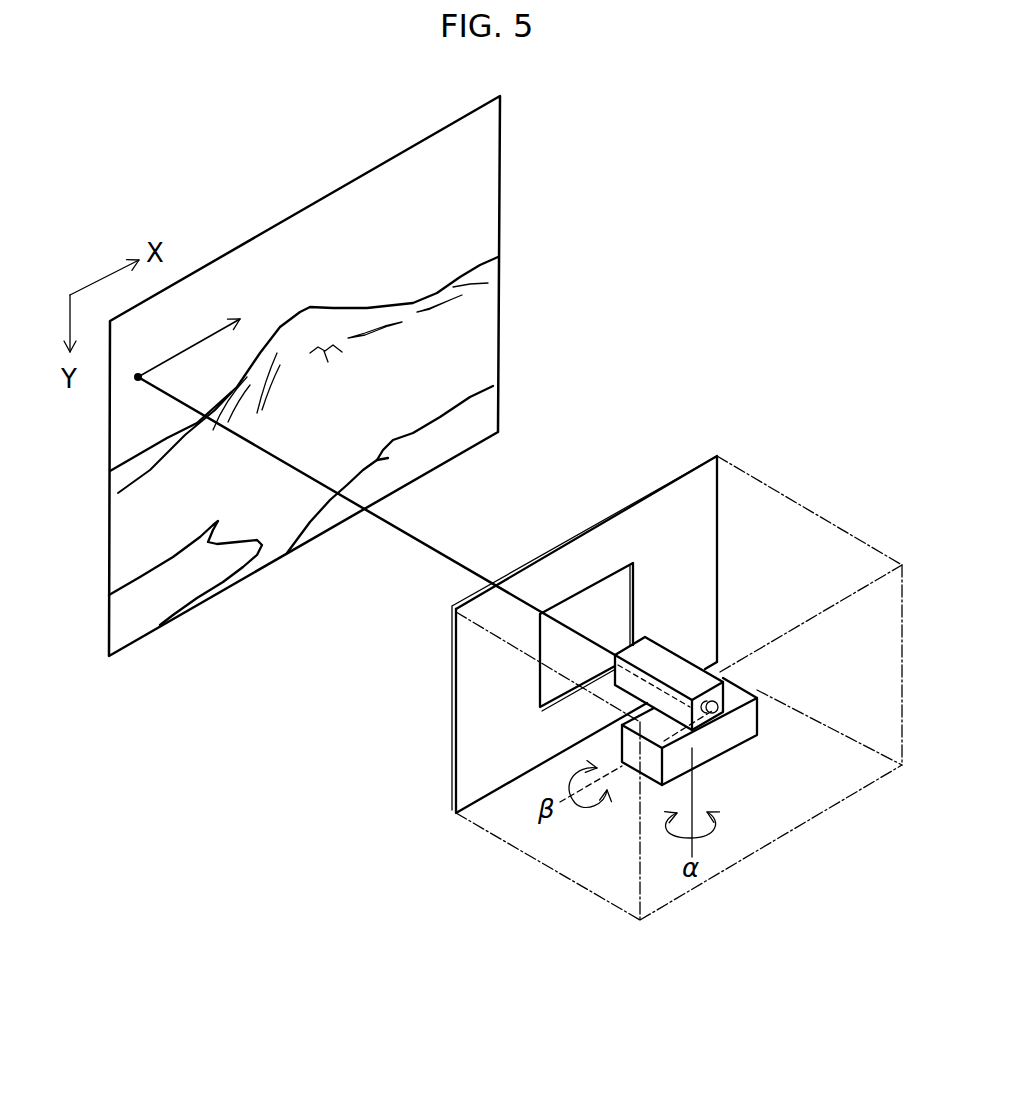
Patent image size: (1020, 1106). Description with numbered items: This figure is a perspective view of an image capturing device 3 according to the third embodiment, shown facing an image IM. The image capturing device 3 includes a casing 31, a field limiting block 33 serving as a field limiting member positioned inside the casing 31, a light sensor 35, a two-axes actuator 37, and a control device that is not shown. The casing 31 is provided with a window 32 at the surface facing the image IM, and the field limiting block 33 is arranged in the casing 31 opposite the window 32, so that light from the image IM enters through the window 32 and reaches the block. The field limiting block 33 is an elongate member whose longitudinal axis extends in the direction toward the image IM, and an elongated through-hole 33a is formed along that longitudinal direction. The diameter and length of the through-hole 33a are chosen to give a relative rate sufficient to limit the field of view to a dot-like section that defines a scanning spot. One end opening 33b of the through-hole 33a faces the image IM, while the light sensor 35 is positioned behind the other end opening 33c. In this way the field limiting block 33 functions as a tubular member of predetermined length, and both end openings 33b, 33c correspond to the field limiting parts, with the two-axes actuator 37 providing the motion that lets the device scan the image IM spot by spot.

The image IM is at (499, 150).
The image capturing device 3 is at (780, 463).
The casing 31 is at (780, 494).
The window 32 is at (580, 593).
The field limiting block 33 is at (680, 653).
The through-hole 33a is at (658, 658).
The one end opening 33b is at (627, 658).
The other end opening 33c is at (640, 718).
The light sensor 35 is at (718, 707).
The two-axes actuator 37 is at (757, 717).